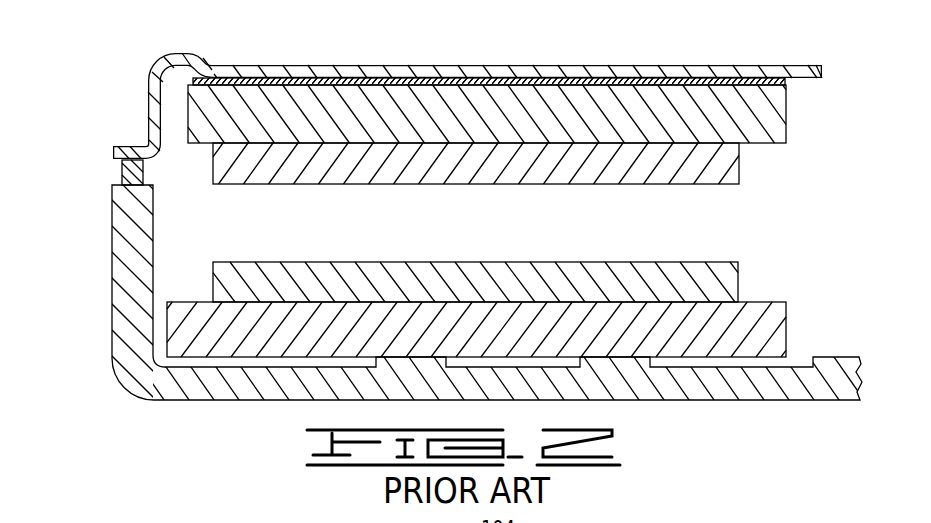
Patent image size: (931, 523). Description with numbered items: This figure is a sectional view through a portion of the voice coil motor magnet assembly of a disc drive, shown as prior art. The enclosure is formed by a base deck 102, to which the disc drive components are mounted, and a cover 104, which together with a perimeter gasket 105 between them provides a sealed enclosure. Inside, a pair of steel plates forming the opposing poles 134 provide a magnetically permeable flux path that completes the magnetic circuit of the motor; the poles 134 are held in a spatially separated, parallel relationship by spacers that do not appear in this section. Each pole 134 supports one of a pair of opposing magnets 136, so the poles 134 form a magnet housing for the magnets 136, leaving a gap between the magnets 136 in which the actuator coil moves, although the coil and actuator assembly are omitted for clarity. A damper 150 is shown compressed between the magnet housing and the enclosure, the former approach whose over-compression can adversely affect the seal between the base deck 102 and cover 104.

The base deck 102 is at (181, 399).
The cover 104 is at (206, 56).
The perimeter gasket 105 is at (121, 178).
The poles 134 is at (787, 124).
The magnets 136 is at (740, 165).
The damper 150 is at (728, 82).